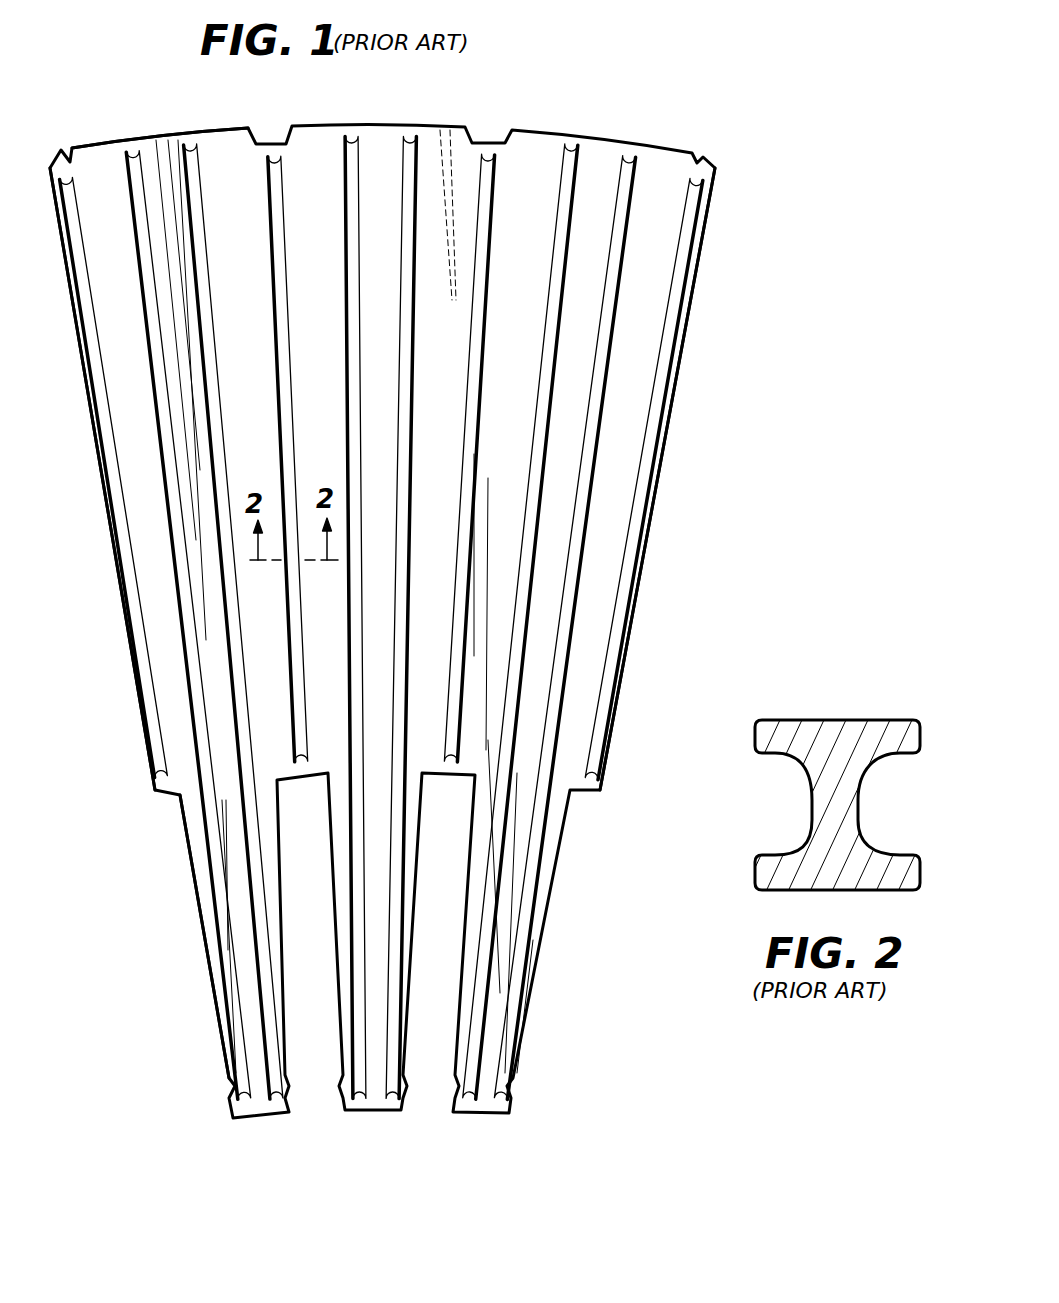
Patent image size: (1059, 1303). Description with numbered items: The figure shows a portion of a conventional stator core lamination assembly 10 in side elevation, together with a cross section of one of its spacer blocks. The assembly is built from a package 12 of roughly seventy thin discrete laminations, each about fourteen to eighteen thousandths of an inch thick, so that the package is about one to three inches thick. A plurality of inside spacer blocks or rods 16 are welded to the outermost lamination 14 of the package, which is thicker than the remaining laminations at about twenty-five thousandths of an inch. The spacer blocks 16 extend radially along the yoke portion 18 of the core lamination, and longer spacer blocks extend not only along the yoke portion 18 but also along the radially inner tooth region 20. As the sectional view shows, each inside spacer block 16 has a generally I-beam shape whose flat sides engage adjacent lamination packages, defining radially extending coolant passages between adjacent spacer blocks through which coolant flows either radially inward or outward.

In FIG. 1, the stator core lamination assembly 10 is at (658, 108).
In FIG. 1, the package 12 is at (706, 233).
In FIG. 1, the outermost lamination 14 is at (105, 173).
In FIG. 1, the inside spacer blocks 16 is at (277, 393).
In FIG. 2, the inside spacer blocks 16 is at (848, 720).
In FIG. 1, the yoke portion 18 is at (118, 578).
In FIG. 1, the tooth region 20 is at (183, 868).